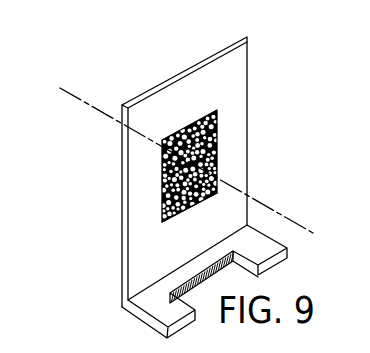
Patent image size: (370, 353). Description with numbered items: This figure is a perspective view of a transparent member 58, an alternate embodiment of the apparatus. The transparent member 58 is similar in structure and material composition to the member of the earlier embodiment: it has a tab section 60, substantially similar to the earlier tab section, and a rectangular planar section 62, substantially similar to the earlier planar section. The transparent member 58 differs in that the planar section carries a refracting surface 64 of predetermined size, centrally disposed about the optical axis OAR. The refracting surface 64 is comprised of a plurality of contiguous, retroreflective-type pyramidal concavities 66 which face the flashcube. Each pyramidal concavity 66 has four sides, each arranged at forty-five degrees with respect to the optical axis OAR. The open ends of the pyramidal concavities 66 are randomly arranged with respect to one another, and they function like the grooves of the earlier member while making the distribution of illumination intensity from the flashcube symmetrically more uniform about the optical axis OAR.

The transparent member 58 is at (182, 62).
The tab section 60 is at (282, 233).
The rectangular planar section 62 is at (248, 128).
The refracting surface 64 is at (215, 158).
The pyramidal concavities 66 is at (184, 208).
The optical axis OAR is at (165, 150).